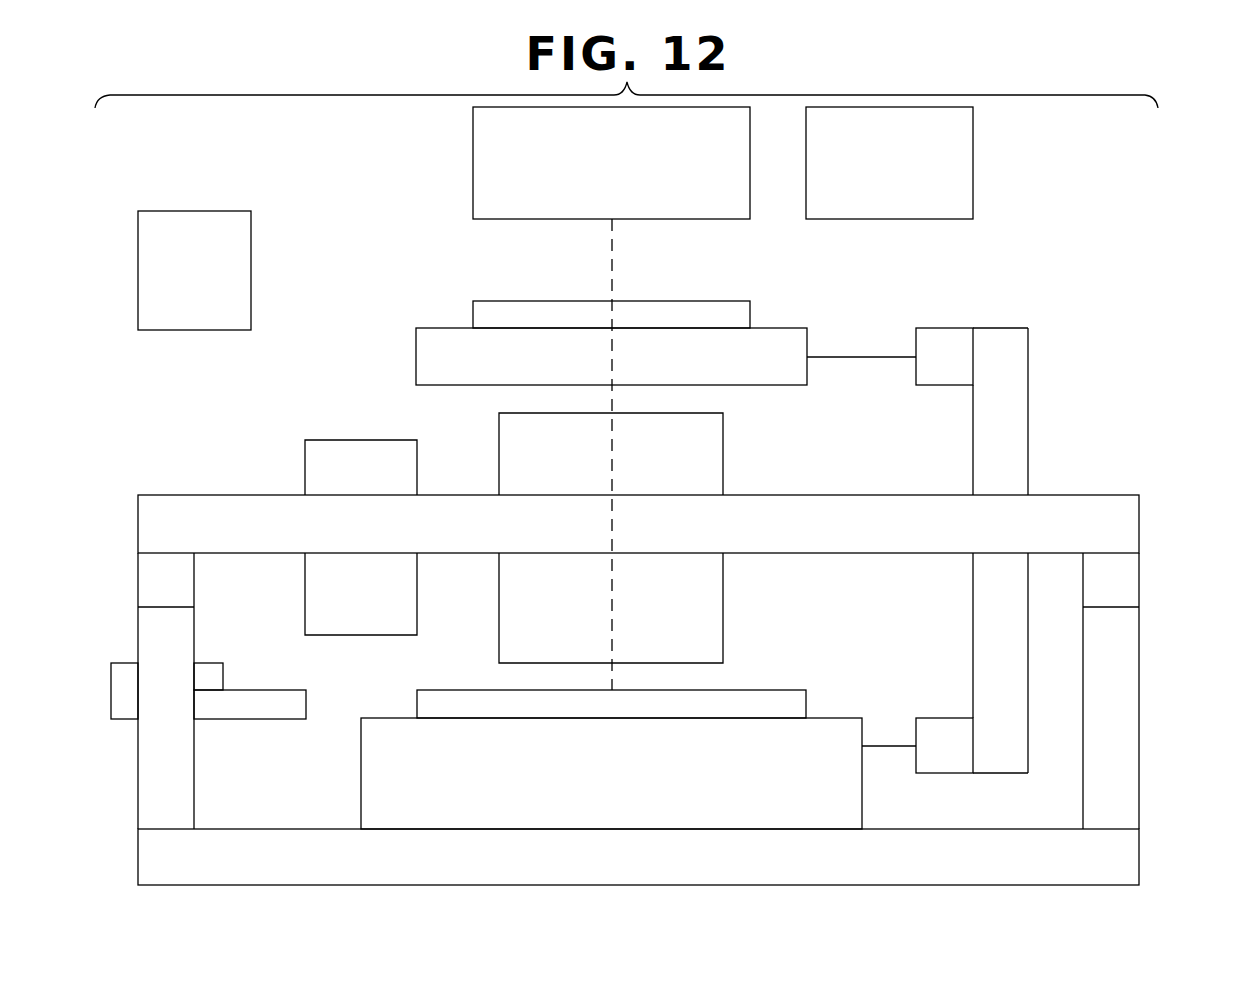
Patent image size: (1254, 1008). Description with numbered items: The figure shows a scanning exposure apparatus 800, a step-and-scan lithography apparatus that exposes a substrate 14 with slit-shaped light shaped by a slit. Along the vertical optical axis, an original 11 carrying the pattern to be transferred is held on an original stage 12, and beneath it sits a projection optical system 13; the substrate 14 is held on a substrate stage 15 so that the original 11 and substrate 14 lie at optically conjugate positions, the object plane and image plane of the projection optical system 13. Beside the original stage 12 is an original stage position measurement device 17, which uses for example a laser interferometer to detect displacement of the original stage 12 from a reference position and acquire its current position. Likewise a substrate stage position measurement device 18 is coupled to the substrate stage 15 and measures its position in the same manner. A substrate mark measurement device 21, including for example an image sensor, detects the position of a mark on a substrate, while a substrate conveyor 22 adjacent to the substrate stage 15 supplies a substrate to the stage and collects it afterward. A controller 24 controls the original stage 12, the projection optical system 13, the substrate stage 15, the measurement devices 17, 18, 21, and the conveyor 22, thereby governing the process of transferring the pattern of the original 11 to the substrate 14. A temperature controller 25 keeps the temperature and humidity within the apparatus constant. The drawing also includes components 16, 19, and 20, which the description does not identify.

The scanning exposure apparatus 800 is at (285, 167).
The original 11 is at (690, 301).
The original stage 12 is at (780, 328).
The projection optical system 13 is at (723, 457).
The substrate 14 is at (790, 690).
The substrate stage 15 is at (385, 718).
The base plate 16 is at (875, 495).
The original stage position measurement device 17 is at (1000, 328).
The substrate stage position measurement device 18 is at (973, 619).
The chamber wall 19 is at (1139, 718).
The base 20 is at (1139, 860).
The substrate mark measurement device 21 is at (363, 440).
The substrate conveyor 22 is at (250, 719).
The controller 24 is at (973, 164).
The temperature controller 25 is at (251, 270).